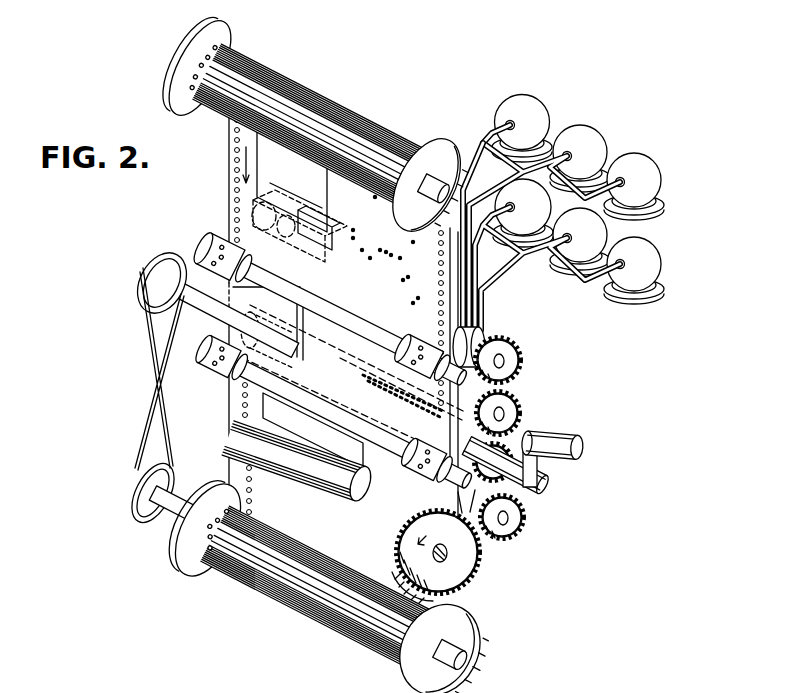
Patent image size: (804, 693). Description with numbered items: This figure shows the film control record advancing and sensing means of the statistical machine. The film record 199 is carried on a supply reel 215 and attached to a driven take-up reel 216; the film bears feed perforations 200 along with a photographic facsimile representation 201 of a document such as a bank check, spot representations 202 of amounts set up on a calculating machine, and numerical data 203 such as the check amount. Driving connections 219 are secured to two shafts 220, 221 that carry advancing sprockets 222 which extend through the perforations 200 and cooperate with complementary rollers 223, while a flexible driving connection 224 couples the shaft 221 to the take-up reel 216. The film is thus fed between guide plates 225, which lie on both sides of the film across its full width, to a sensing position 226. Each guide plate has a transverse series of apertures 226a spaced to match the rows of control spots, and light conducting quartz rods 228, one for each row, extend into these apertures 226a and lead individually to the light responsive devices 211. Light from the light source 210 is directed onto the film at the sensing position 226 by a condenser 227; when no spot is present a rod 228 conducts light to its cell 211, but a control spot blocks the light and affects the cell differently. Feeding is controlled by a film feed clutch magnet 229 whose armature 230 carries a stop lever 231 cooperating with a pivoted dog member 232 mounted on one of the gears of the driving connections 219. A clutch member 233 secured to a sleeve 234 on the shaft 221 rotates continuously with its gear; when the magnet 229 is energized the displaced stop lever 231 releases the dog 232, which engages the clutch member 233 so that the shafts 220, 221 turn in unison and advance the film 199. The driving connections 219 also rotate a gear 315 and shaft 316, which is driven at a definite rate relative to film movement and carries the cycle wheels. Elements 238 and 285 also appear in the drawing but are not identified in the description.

The film record 199 is at (455, 213).
The perforations 200 is at (238, 173).
The photographic facsimile representation 201 is at (307, 213).
The spot representations 202 is at (366, 252).
The numerical data 203 is at (420, 290).
The light source 210 is at (240, 450).
The light responsive devices 211 is at (522, 104).
The supply reel 215 is at (428, 158).
The take-up reel 216 is at (470, 630).
The driving connections 219 is at (518, 371).
The shaft 220 is at (380, 294).
The shaft 221 is at (197, 302).
The advancing sprockets 222 is at (472, 321).
The complementary rollers 223 is at (222, 378).
The flexible driving connection 224 is at (147, 360).
The guide plates 225 is at (299, 358).
The sensing position 226 is at (298, 356).
The apertures 226a is at (401, 387).
The condenser 227 is at (330, 440).
The light conducting quartz rods 228 is at (468, 243).
The film feed clutch magnet 229 is at (580, 457).
The armature 230 is at (564, 437).
The stop lever 231 is at (518, 438).
The pivoted dog member 232 is at (507, 447).
The clutch member 233 is at (477, 490).
The sleeve 234 is at (527, 490).
The shaft 238 is at (306, 298).
The contact strip 285 is at (440, 420).
The gear 315 is at (462, 580).
The shaft 316 is at (448, 554).